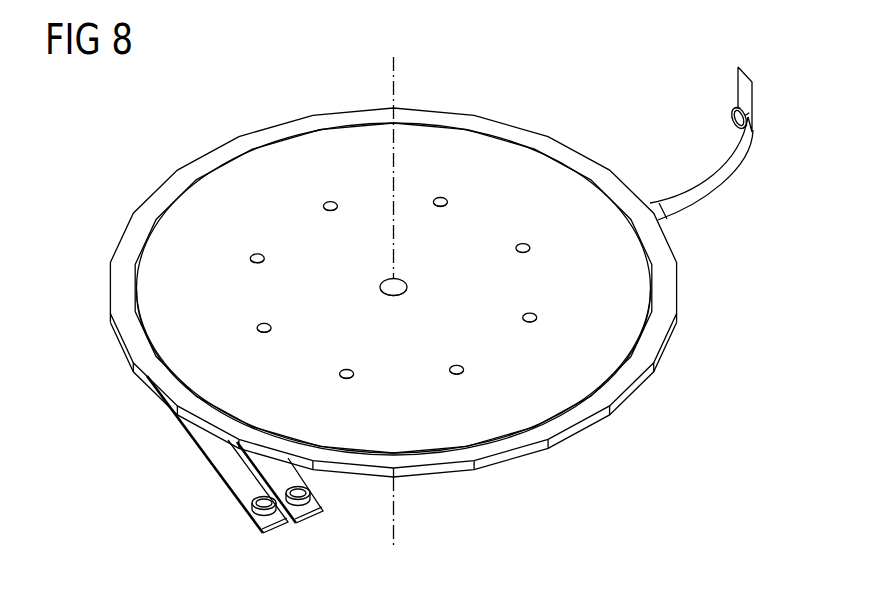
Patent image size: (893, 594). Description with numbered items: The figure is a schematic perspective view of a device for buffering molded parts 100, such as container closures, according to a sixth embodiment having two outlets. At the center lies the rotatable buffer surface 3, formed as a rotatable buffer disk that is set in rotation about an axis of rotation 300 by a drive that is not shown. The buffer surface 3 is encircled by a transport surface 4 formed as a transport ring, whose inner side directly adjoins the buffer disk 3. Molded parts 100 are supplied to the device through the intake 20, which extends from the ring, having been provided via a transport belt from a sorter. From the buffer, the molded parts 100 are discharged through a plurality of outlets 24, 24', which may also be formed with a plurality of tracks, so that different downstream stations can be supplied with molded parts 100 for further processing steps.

The rotatable buffer surface 3 is at (482, 226).
The transport surface 4 is at (128, 250).
The intake 20 is at (727, 164).
The outlet 24 is at (214, 454).
The outlet 24' is at (317, 486).
The molded parts 100 is at (732, 121).
The axis of rotation 300 is at (396, 67).